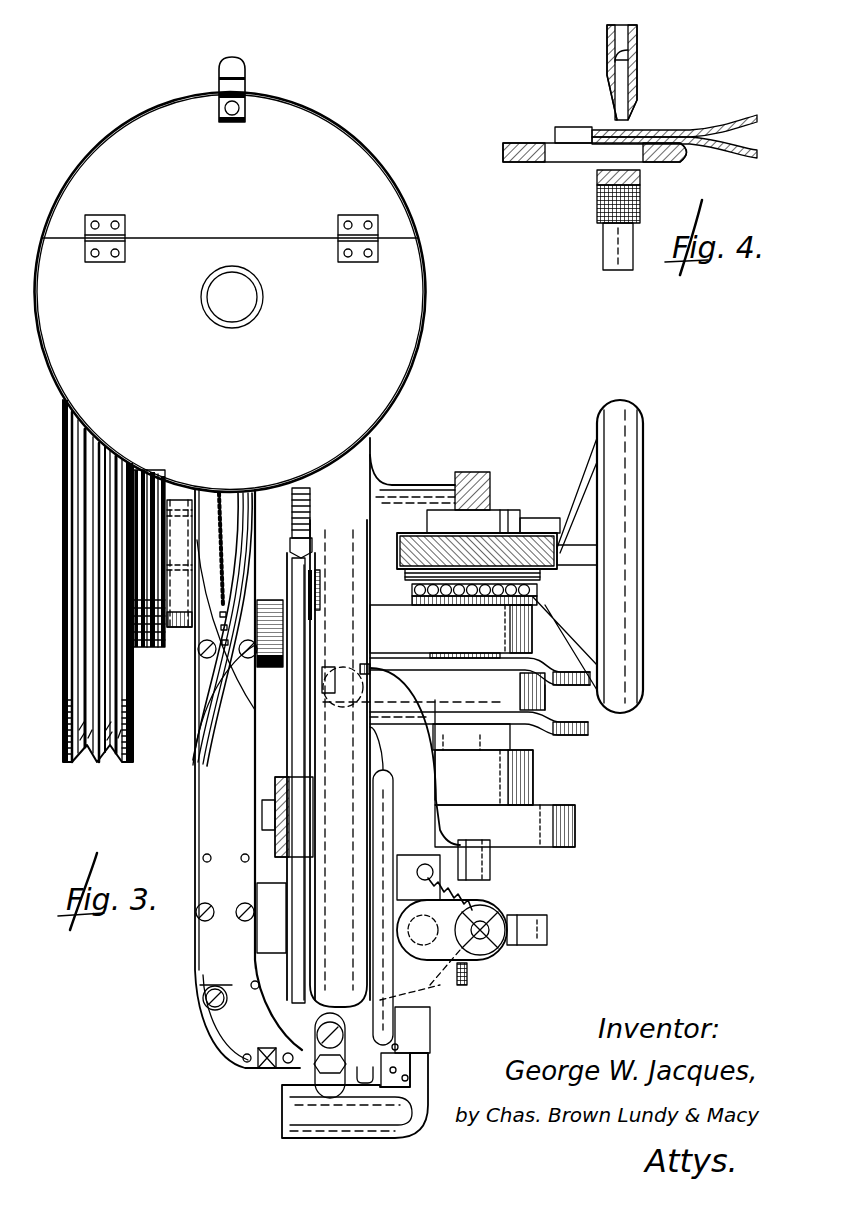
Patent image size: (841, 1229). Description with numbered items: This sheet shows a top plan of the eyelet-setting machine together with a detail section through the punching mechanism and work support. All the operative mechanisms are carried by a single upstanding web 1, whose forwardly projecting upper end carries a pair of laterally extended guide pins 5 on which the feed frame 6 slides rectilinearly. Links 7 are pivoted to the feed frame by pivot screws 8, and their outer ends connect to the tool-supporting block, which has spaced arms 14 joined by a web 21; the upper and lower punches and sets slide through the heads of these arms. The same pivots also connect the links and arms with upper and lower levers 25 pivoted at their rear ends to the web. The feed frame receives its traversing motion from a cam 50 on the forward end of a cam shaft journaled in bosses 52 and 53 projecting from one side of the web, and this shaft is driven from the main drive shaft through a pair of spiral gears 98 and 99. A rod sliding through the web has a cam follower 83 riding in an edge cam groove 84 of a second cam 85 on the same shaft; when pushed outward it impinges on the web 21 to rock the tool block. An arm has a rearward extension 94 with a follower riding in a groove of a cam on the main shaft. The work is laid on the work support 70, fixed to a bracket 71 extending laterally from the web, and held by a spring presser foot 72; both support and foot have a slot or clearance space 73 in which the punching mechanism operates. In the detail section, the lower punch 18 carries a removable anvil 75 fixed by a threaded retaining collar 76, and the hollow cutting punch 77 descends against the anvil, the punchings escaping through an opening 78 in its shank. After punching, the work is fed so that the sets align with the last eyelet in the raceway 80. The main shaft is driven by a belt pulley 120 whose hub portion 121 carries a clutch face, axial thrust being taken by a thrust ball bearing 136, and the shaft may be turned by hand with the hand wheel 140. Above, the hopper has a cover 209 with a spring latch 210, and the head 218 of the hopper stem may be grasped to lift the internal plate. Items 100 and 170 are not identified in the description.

In FIG. 3, the upstanding web 1 is at (357, 464).
In FIG. 3, the guide pins 5 is at (548, 922).
In FIG. 3, the feed frame 6 is at (505, 905).
In FIG. 3, the links 7 is at (490, 952).
In FIG. 3, the pivot screws 8 is at (482, 962).
In FIG. 3, the spaced arms 14 is at (410, 997).
In FIG. 4, the lower punch 18 is at (605, 250).
In FIG. 3, the web 21 is at (440, 988).
In FIG. 3, the upper and lower levers 25 is at (422, 782).
In FIG. 3, the cam 50 is at (565, 830).
In FIG. 3, the boss 52 is at (533, 625).
In FIG. 3, the boss 53 is at (533, 793).
In FIG. 3, the work support 70 is at (420, 1042).
In FIG. 4, the work support 70 is at (522, 142).
In FIG. 3, the bracket 71 is at (262, 935).
In FIG. 3, the spring presser foot 72 is at (372, 1115).
In FIG. 4, the spring presser foot 72 is at (685, 128).
In FIG. 3, the slot or clearance space 73 is at (300, 1090).
In FIG. 4, the removable anvil 75 is at (600, 174).
In FIG. 4, the threaded retaining collar 76 is at (640, 200).
In FIG. 4, the hollow cutting punch 77 is at (637, 88).
In FIG. 4, the opening 78 is at (612, 64).
In FIG. 3, the raceway 80 is at (205, 790).
In FIG. 3, the cam follower 83 is at (375, 668).
In FIG. 3, the edge cam groove 84 is at (575, 722).
In FIG. 3, the cam 85 is at (520, 736).
In FIG. 3, the rearward extension 94 is at (297, 690).
In FIG. 3, the spiral gear 98 is at (484, 472).
In FIG. 3, the spiral gear 99 is at (535, 520).
In FIG. 3, the stop block 100 is at (262, 1070).
In FIG. 3, the belt pulley 120 is at (70, 517).
In FIG. 3, the hub portion 121 is at (142, 648).
In FIG. 3, the thrust ball bearing 136 is at (311, 514).
In FIG. 3, the hand wheel 140 is at (618, 505).
In FIG. 3, the disk 170 is at (418, 298).
In FIG. 3, the cover 209 is at (350, 133).
In FIG. 3, the spring latch 210 is at (247, 70).
In FIG. 3, the head 218 is at (250, 300).